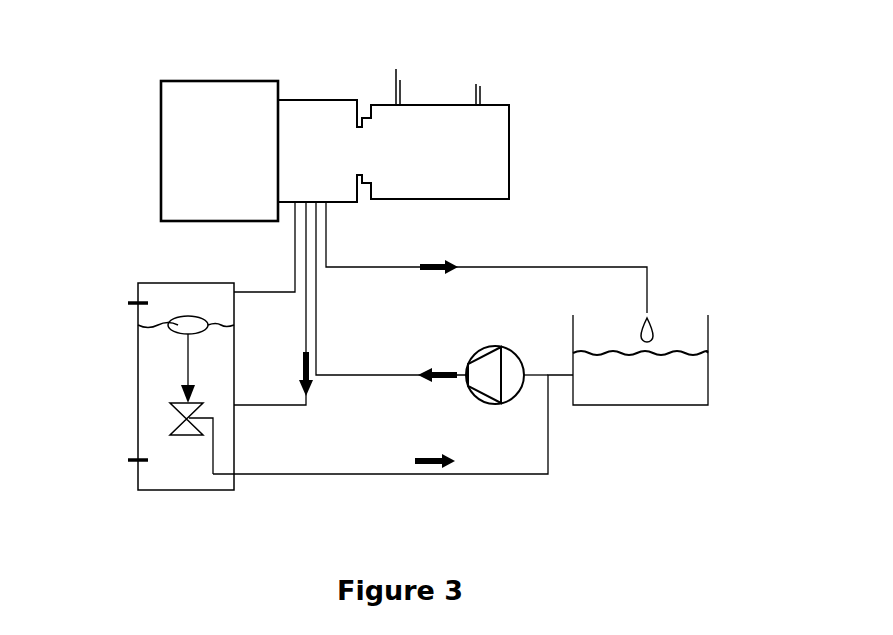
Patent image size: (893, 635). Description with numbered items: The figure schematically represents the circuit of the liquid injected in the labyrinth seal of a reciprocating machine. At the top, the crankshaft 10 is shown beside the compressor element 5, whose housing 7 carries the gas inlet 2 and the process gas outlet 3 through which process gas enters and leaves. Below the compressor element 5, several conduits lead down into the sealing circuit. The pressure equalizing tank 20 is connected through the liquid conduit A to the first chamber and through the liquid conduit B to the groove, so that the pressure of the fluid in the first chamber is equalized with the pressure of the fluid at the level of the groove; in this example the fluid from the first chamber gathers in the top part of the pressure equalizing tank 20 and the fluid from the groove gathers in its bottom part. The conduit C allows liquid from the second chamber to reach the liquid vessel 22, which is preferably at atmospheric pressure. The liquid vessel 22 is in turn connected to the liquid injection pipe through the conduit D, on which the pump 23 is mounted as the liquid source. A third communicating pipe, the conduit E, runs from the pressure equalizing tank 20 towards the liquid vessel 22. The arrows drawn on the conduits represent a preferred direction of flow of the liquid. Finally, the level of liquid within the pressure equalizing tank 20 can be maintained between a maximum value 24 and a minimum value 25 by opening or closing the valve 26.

The crankshaft 10 is at (207, 98).
The gas inlet 2 is at (398, 80).
The process gas outlet 3 is at (478, 88).
The compressor element 5 is at (482, 131).
The housing 7 is at (510, 168).
The pressure equalizing tank 20 is at (141, 402).
The liquid vessel 22 is at (708, 370).
The pump 23 is at (493, 405).
The maximum value 24 is at (130, 303).
The minimum value 25 is at (130, 460).
The valve 26 is at (170, 430).
The liquid conduit A is at (297, 262).
The liquid conduit B is at (306, 258).
The conduit C is at (530, 267).
The conduit D is at (391, 292).
The conduit E is at (316, 474).